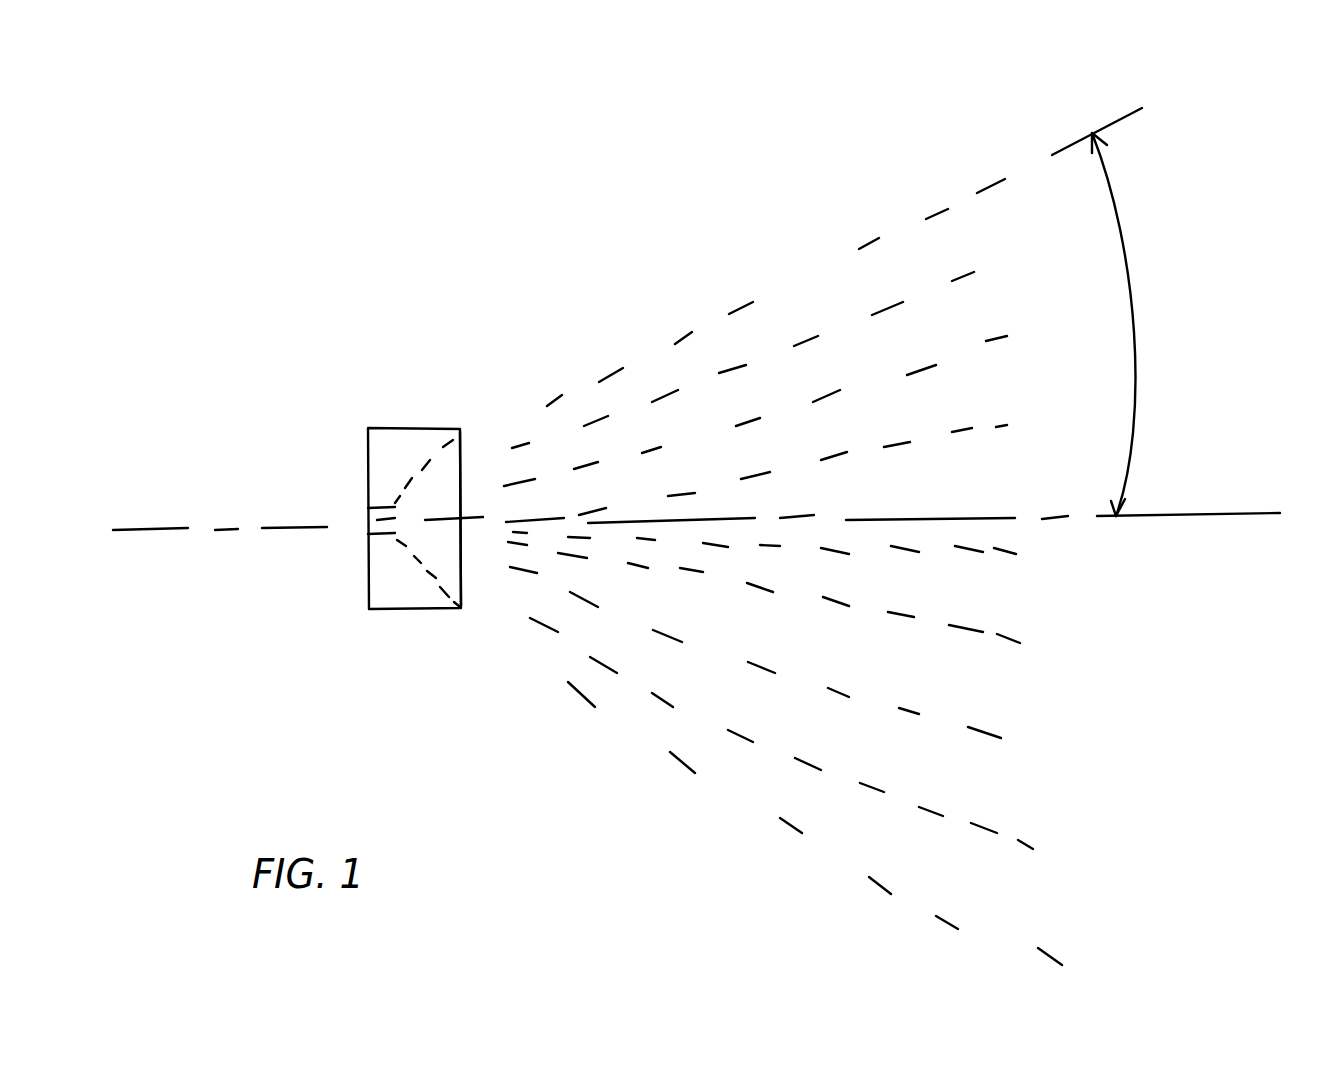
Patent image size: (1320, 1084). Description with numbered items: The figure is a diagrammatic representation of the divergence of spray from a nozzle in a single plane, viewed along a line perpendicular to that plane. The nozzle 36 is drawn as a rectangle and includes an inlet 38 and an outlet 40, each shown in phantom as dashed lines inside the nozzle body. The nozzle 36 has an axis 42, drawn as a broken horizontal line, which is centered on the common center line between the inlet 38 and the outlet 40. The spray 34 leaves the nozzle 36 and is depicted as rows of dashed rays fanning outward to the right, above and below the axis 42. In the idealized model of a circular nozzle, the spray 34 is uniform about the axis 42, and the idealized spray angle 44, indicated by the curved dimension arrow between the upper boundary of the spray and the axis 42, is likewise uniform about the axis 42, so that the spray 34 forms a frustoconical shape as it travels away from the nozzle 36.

The spray 34 is at (820, 273).
The nozzle 36 is at (417, 428).
The inlet 38 is at (355, 548).
The outlet 40 is at (479, 437).
The axis 42 is at (1178, 515).
The spray angle 44 is at (1137, 315).